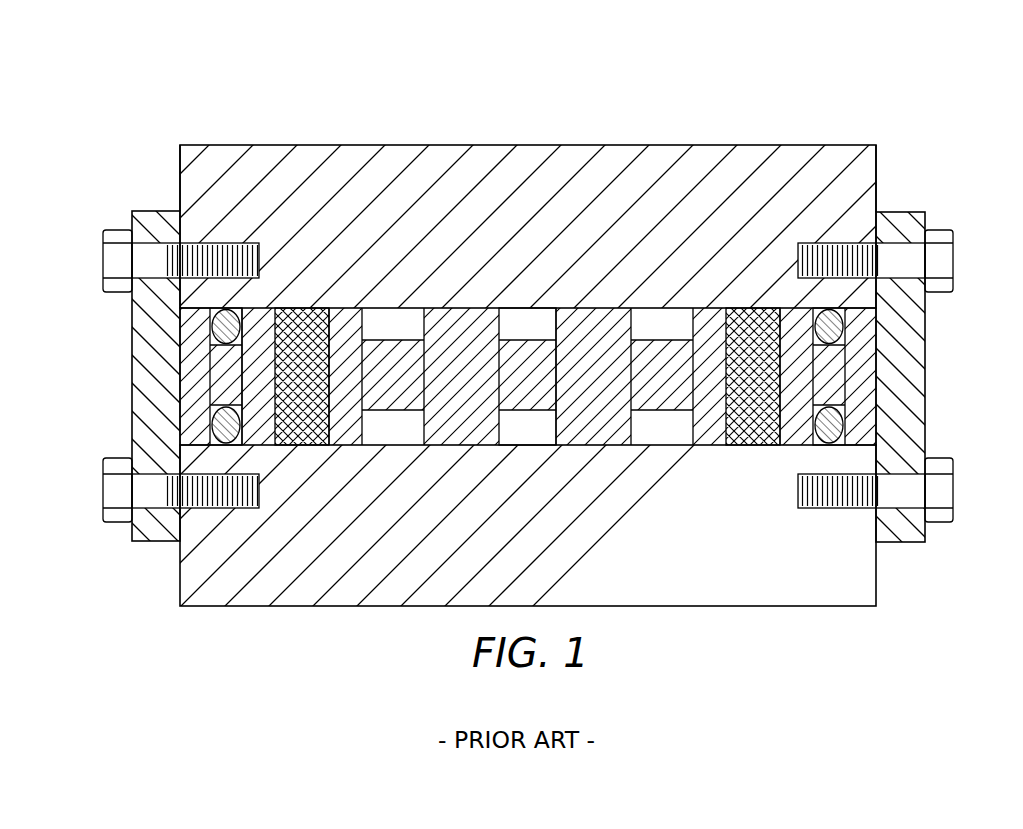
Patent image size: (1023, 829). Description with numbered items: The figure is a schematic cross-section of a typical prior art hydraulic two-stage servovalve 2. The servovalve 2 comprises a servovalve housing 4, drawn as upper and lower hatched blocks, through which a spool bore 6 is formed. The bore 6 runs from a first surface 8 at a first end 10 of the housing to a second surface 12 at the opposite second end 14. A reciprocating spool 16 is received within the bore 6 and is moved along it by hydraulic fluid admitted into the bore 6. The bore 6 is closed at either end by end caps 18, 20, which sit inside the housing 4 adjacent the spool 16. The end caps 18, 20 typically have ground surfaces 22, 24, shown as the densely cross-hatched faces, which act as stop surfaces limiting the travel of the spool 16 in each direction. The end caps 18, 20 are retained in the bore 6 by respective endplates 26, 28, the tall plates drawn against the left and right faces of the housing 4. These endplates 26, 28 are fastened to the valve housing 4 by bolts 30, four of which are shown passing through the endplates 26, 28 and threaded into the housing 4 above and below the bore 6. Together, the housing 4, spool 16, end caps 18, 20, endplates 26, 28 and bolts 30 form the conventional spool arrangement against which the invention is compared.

The servovalve 2 is at (511, 368).
The servovalve housing 4 is at (228, 152).
The spool bore 6 is at (301, 446).
The first surface 8 is at (180, 156).
The second surface 12 is at (880, 158).
The first end 10 is at (178, 428).
The second end 14 is at (855, 425).
The reciprocating spool 16 is at (530, 400).
The end cap 18 is at (180, 360).
The end cap 20 is at (850, 368).
The ground surface 22 is at (292, 312).
The ground surface 24 is at (762, 310).
The endplate 26 is at (131, 312).
The endplate 28 is at (926, 313).
The bolts 30 is at (103, 262).